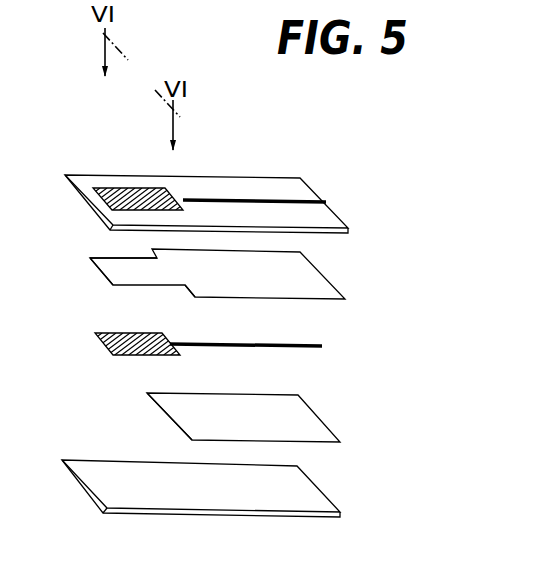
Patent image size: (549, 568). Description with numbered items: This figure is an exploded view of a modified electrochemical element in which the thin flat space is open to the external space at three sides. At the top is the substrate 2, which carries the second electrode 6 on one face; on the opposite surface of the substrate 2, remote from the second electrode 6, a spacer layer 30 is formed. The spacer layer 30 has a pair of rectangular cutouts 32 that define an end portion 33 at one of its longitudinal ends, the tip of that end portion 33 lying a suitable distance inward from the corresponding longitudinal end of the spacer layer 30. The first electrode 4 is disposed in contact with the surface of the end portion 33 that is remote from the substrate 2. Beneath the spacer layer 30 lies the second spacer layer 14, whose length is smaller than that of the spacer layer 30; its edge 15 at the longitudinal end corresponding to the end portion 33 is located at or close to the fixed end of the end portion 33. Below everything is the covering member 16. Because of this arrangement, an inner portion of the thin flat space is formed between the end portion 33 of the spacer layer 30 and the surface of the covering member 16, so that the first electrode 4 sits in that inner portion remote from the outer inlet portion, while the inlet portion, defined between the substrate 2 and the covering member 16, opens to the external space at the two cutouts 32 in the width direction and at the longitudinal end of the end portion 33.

The substrate 2 is at (277, 190).
The second electrode 6 is at (130, 192).
The spacer layer 30 is at (310, 278).
The rectangular cutouts 32 is at (105, 258).
The end portion 33 is at (110, 270).
The first electrode 4 is at (108, 338).
The second spacer layer 14 is at (303, 422).
The edge 15 is at (163, 412).
The covering member 16 is at (315, 497).